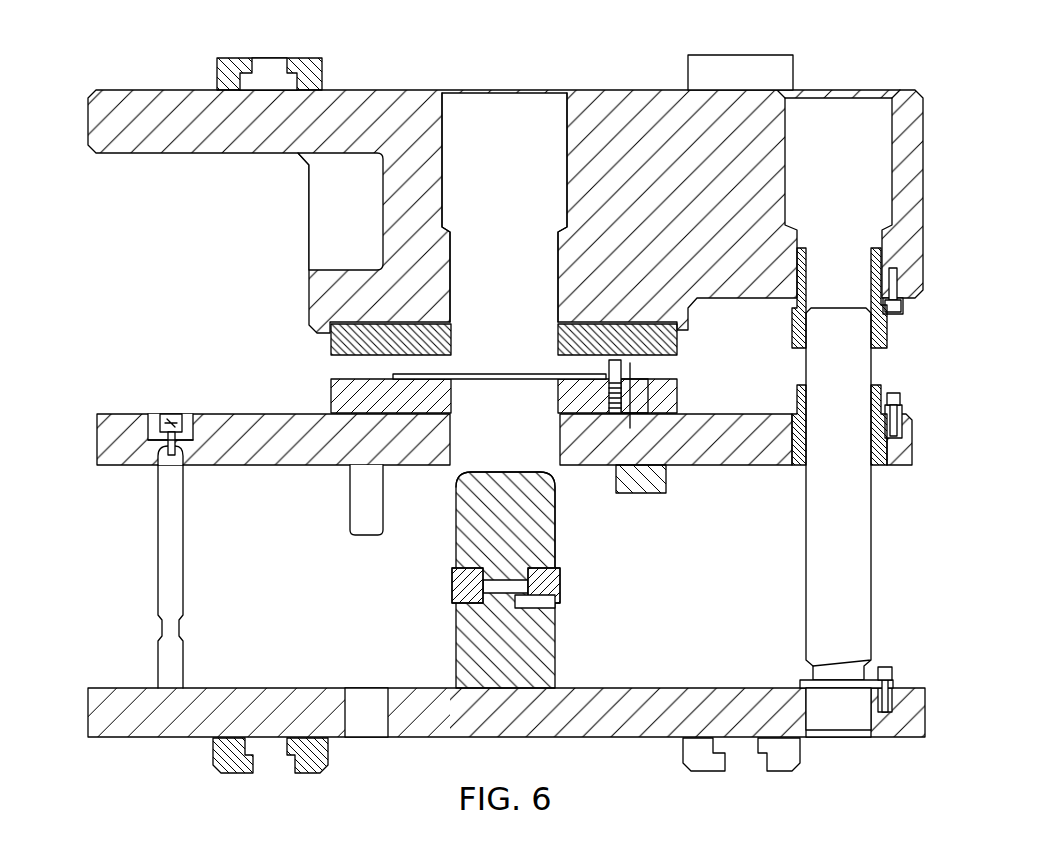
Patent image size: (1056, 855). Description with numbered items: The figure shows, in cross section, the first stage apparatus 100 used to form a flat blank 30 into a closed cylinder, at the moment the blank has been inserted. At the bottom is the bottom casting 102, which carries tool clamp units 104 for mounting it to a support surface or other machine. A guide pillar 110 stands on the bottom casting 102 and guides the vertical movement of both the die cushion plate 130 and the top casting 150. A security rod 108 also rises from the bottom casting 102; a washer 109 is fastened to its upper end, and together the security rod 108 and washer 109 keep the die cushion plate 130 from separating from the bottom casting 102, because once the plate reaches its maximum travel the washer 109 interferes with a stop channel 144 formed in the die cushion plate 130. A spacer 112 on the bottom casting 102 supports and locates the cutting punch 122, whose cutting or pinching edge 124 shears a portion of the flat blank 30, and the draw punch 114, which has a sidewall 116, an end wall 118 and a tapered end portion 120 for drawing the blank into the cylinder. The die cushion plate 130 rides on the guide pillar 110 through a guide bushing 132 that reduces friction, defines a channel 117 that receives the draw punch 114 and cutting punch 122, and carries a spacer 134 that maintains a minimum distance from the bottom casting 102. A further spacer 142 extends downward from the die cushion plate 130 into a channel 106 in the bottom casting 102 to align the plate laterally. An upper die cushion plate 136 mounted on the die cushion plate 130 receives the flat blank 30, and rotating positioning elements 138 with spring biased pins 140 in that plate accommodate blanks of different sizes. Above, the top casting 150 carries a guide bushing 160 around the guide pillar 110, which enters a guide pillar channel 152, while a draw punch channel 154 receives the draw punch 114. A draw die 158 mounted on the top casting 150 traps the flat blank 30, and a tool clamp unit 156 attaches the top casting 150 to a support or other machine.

The flat blank 30 is at (463, 366).
The first stage apparatus 100 is at (570, 421).
The bottom casting 102 is at (535, 731).
The tool clamp units 104 is at (209, 776).
The channel 106 is at (388, 722).
The security rod 108 is at (184, 572).
The washer 109 is at (190, 414).
The guide pillar 110 is at (874, 572).
The spacer 112 is at (556, 646).
The draw punch 114 is at (522, 558).
The sidewall 116 is at (556, 507).
The channel 117 is at (496, 448).
The end wall 118 is at (505, 471).
The tapered end portion 120 is at (554, 479).
The cutting punch 122 is at (452, 598).
The cutting or pinching edge 124 is at (452, 574).
The die cushion plate 130 is at (913, 442).
The guide bushing 132 is at (888, 391).
The spacer 134 is at (667, 484).
The upper die cushion plate 136 is at (330, 404).
The rotating positioning elements 138 is at (652, 378).
The spring biased pins 140 is at (604, 362).
The spacer 142 is at (349, 514).
The stop channel 144 is at (152, 414).
The top casting 150 is at (530, 195).
The guide pillar channel 152 is at (895, 156).
The draw punch channel 154 is at (570, 100).
The tool clamp unit 156 is at (323, 66).
The draw die 158 is at (330, 348).
The guide bushing 160 is at (888, 326).